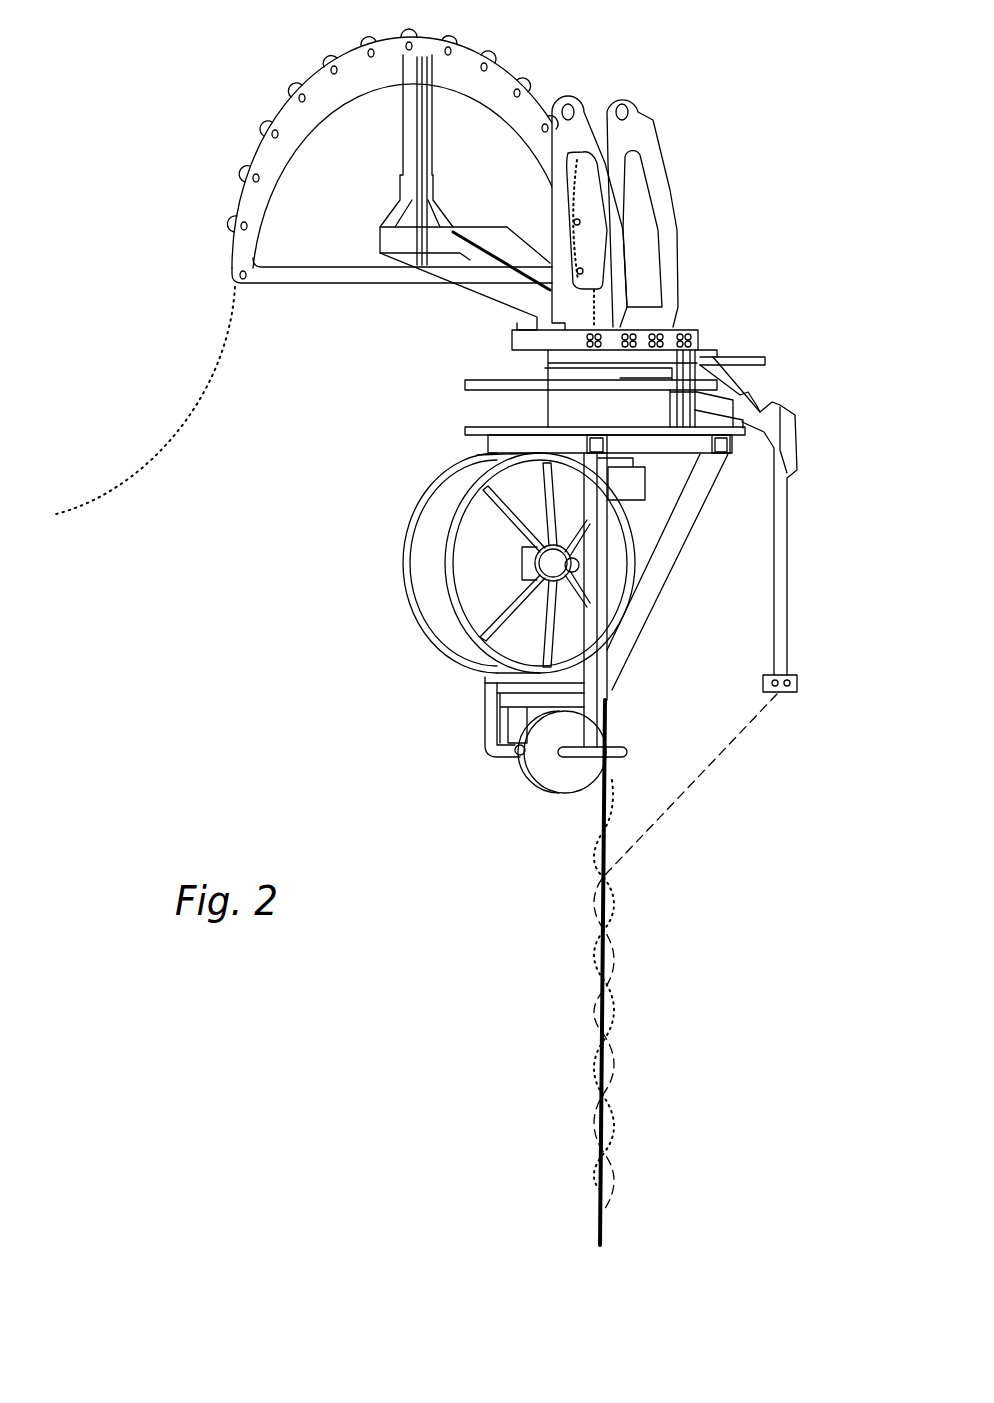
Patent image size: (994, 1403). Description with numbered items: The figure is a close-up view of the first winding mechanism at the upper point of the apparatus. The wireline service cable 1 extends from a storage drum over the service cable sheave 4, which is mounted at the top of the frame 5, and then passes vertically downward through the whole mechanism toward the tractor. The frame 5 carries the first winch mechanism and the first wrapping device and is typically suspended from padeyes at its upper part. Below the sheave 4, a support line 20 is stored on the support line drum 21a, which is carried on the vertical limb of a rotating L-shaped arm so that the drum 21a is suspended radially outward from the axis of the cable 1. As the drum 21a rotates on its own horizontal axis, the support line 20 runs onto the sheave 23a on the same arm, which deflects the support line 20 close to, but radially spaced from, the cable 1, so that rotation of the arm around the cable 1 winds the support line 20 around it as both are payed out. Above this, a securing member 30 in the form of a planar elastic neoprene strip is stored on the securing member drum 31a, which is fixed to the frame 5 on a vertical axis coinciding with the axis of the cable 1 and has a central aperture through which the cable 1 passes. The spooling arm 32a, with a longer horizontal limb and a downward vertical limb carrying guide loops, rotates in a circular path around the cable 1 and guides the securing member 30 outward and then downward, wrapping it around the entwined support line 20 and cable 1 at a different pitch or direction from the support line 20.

The wireline service cable 1 is at (190, 427).
The service cable sheave 4 is at (526, 50).
The frame 5 is at (666, 318).
The support line 20 is at (480, 683).
The support line drum 21a is at (410, 563).
The sheave 23a is at (528, 773).
The securing member 30 is at (690, 790).
The securing member drum 31a is at (452, 405).
The spooling arm 32a is at (778, 563).